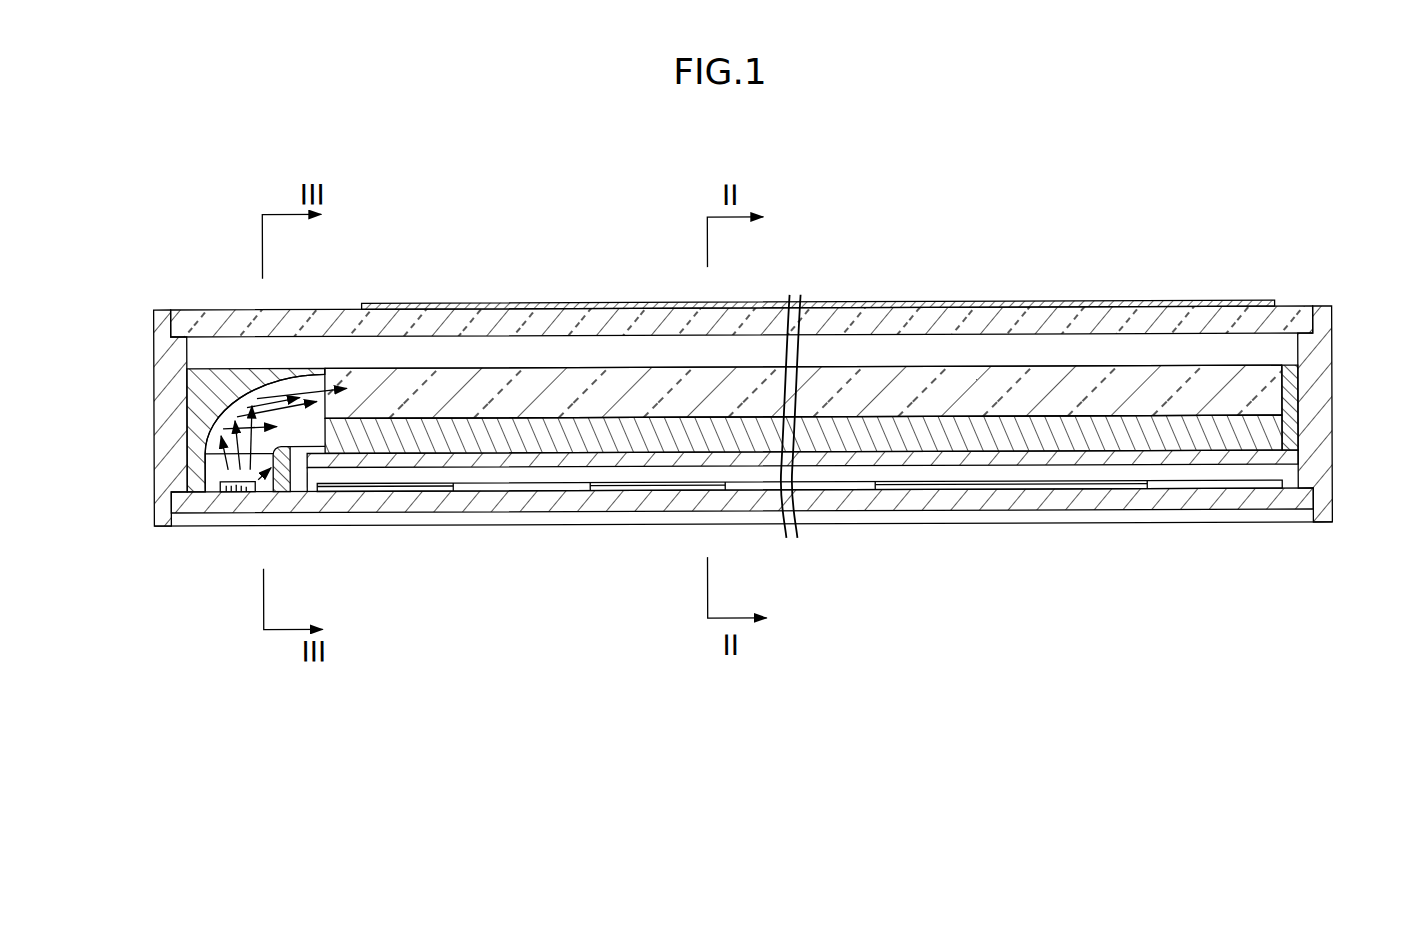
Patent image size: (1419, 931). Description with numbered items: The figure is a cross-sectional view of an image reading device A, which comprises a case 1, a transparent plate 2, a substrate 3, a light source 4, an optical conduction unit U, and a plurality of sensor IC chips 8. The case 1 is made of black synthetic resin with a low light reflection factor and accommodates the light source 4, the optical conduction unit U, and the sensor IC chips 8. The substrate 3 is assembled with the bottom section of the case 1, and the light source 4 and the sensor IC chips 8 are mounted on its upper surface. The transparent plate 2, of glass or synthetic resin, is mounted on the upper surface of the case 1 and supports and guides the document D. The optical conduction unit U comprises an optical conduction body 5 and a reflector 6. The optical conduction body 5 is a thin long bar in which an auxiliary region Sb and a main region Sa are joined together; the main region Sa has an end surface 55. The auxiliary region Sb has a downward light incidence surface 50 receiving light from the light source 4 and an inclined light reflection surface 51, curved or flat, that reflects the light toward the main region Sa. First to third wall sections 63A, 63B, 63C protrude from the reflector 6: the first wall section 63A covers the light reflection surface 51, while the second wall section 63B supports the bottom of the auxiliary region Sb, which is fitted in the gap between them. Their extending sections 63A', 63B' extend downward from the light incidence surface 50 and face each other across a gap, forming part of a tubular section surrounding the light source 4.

The case 1 is at (150, 407).
The transparent plate 2 is at (403, 308).
The substrate 3 is at (948, 505).
The light source 4 is at (219, 492).
The optical conduction body 5 is at (549, 367).
The reflector 6 is at (209, 364).
The sensor IC chips 8 is at (612, 487).
The light incidence surface 50 is at (190, 466).
The light reflection surface 51 is at (286, 367).
The end surface 55 is at (1282, 375).
The first wall section 63A is at (133, 444).
The extending section 63A' is at (146, 538).
The second wall section 63B is at (317, 532).
The extending section 63B' is at (292, 527).
The third wall section 63C is at (1307, 408).
The image reading device A is at (919, 200).
The document D is at (1045, 306).
The main region Sa is at (972, 367).
The auxiliary region Sb is at (334, 455).
The optical conduction unit U is at (622, 362).